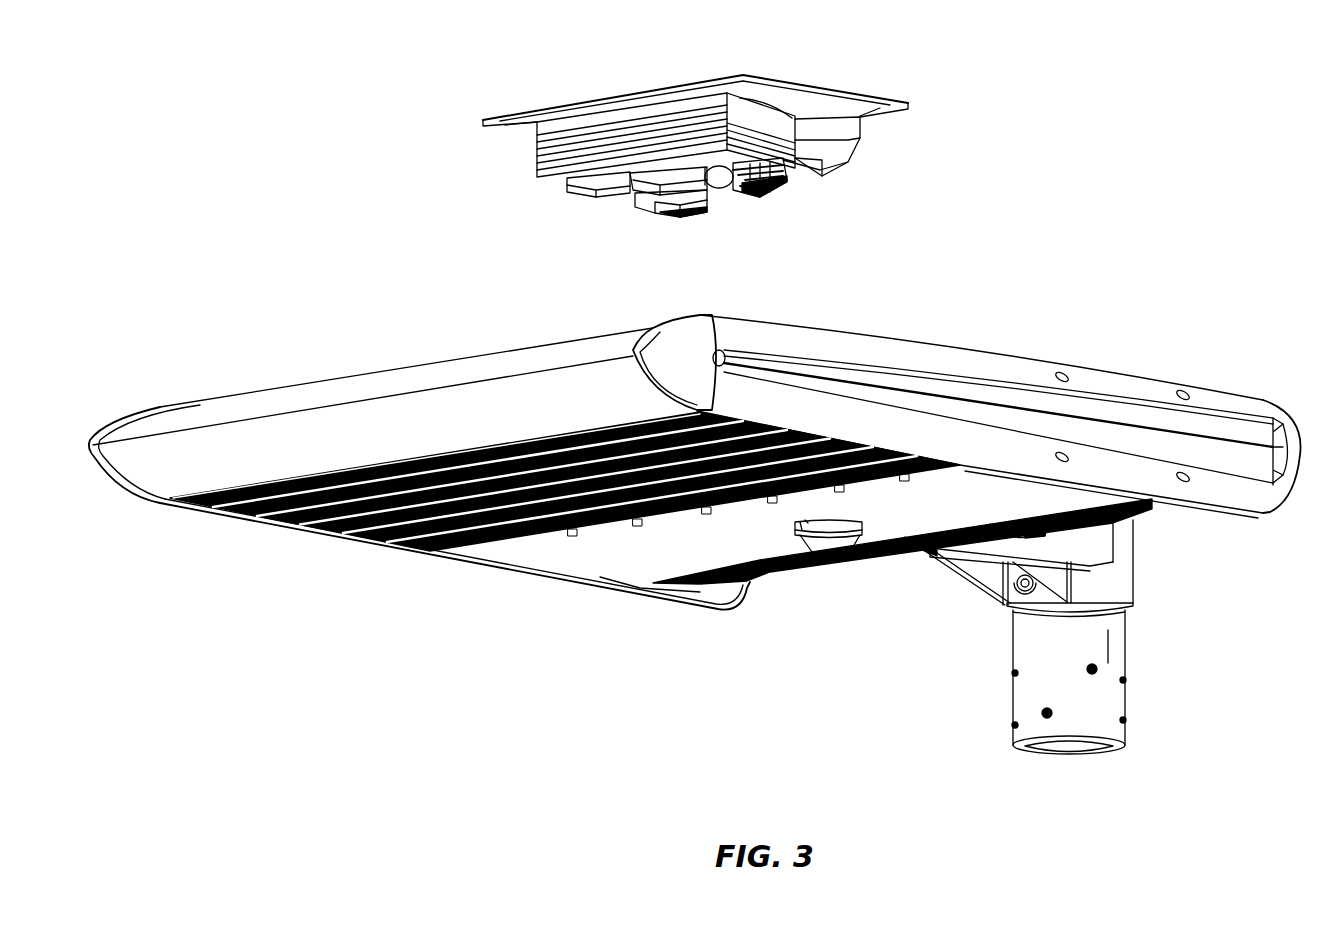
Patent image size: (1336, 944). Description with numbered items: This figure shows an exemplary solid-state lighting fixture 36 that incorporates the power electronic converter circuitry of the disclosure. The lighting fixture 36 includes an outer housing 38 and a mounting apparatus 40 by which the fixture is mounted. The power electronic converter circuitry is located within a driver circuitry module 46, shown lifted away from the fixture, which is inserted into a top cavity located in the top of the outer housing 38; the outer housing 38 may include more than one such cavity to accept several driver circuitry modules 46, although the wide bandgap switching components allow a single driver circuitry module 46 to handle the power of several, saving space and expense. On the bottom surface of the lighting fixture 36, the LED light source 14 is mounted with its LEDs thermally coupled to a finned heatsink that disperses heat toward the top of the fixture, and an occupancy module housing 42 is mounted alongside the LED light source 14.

The LED light source 14 is at (447, 560).
The lighting fixture 36 is at (1040, 146).
The outer housing 38 is at (1243, 397).
The mounting apparatus 40 is at (1127, 707).
The occupancy module housing 42 is at (835, 552).
The driver circuitry module 46 is at (577, 103).